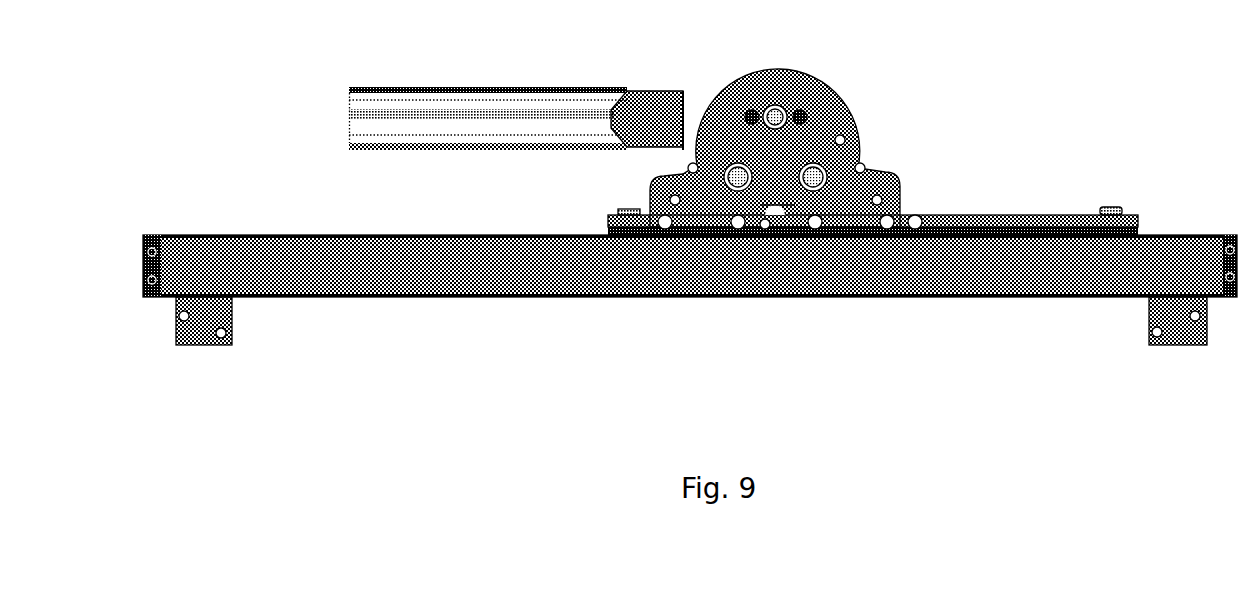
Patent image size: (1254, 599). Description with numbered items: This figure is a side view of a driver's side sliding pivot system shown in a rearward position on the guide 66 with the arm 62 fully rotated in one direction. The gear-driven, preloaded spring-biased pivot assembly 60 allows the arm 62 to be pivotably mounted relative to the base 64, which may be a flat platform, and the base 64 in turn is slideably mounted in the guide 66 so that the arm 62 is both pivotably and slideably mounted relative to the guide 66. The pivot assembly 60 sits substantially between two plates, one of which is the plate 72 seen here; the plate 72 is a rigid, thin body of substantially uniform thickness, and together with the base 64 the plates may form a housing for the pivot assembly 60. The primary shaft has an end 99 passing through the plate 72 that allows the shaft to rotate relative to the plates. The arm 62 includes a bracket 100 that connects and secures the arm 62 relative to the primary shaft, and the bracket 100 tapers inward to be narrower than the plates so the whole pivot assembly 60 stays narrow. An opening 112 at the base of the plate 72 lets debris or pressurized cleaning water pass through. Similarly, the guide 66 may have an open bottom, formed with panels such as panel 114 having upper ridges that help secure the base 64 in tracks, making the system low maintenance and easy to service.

The pivot assembly 60 is at (777, 133).
The arm 62 is at (428, 108).
The base 64 is at (1060, 215).
The guide 66 is at (543, 278).
The plate 72 is at (836, 112).
The end of primary shaft 99 is at (785, 110).
The bracket 100 is at (657, 108).
The opening 112 is at (782, 217).
The panel 114 is at (341, 280).